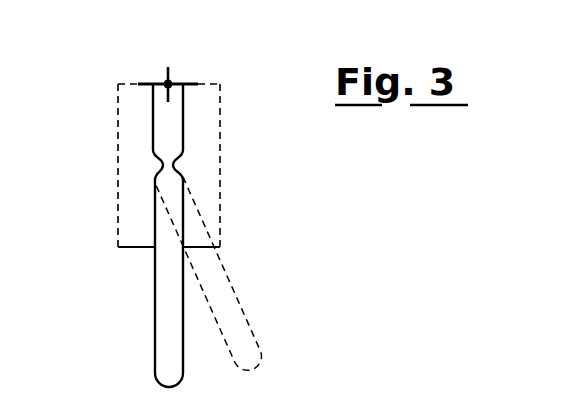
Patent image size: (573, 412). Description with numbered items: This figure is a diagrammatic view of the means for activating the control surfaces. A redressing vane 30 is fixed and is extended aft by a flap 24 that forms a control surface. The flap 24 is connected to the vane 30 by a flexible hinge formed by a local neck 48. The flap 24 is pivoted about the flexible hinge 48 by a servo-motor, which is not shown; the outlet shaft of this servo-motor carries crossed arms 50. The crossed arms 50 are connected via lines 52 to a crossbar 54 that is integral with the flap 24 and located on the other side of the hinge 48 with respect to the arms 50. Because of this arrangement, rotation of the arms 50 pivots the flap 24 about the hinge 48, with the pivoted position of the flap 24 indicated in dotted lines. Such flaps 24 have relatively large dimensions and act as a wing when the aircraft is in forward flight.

The flap 24 is at (155, 330).
The redressing vane 30 is at (183, 124).
The local neck 48 is at (176, 163).
The crossed arms 50 is at (184, 84).
The lines 52 is at (118, 134).
The crossbar 54 is at (122, 248).